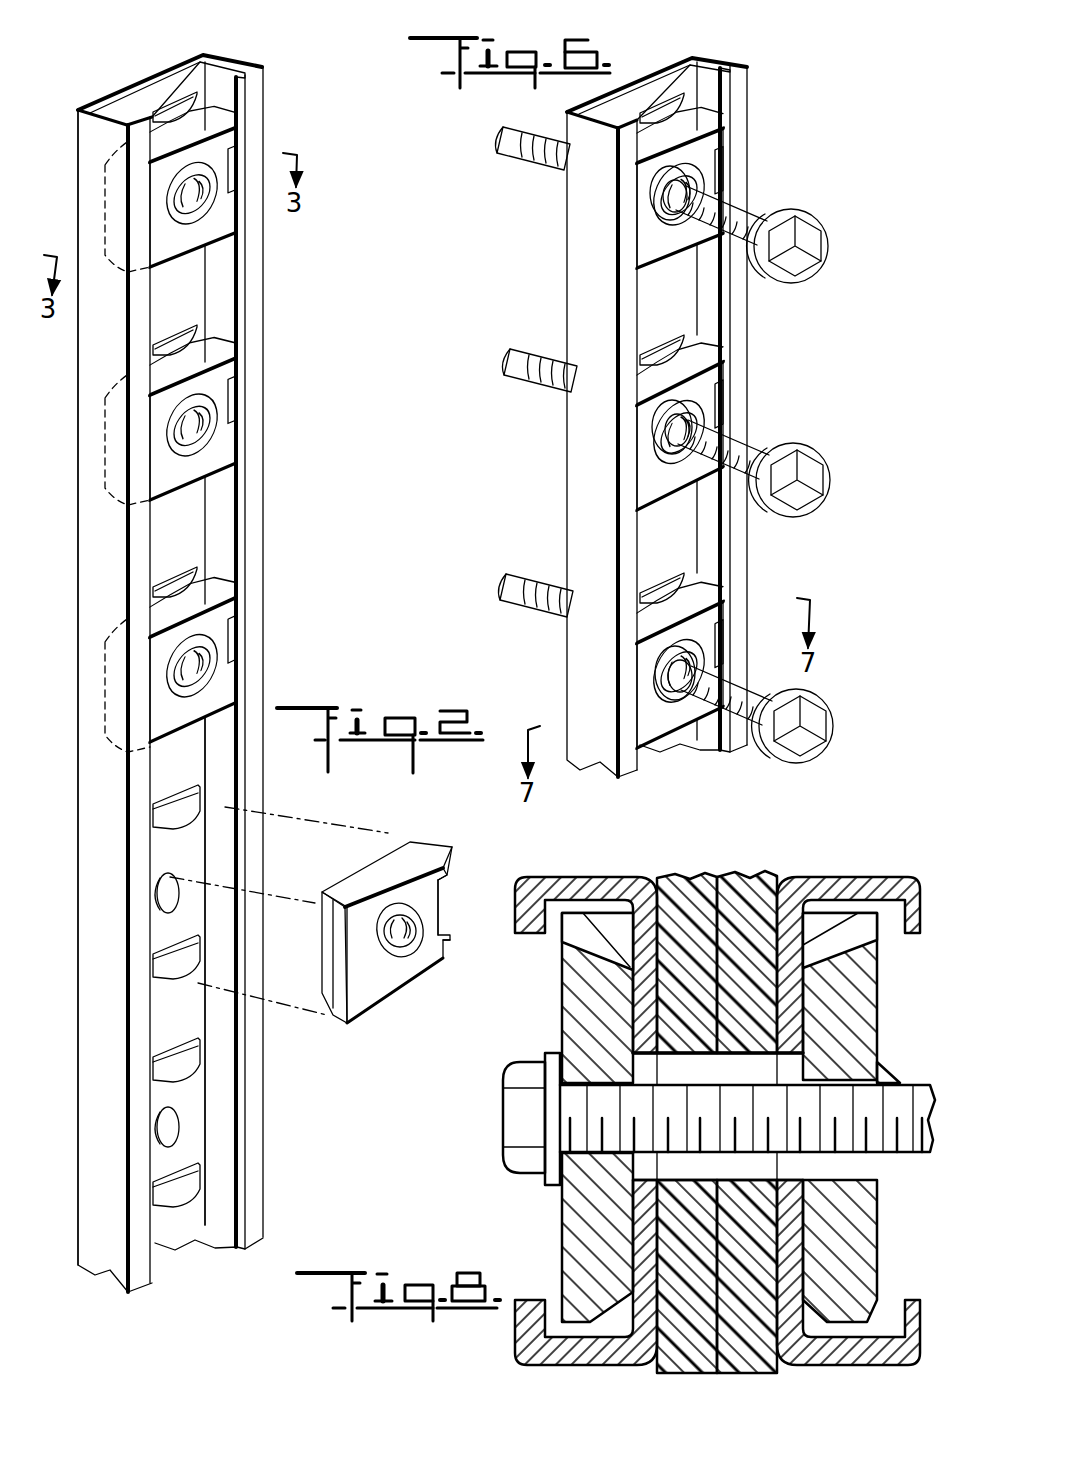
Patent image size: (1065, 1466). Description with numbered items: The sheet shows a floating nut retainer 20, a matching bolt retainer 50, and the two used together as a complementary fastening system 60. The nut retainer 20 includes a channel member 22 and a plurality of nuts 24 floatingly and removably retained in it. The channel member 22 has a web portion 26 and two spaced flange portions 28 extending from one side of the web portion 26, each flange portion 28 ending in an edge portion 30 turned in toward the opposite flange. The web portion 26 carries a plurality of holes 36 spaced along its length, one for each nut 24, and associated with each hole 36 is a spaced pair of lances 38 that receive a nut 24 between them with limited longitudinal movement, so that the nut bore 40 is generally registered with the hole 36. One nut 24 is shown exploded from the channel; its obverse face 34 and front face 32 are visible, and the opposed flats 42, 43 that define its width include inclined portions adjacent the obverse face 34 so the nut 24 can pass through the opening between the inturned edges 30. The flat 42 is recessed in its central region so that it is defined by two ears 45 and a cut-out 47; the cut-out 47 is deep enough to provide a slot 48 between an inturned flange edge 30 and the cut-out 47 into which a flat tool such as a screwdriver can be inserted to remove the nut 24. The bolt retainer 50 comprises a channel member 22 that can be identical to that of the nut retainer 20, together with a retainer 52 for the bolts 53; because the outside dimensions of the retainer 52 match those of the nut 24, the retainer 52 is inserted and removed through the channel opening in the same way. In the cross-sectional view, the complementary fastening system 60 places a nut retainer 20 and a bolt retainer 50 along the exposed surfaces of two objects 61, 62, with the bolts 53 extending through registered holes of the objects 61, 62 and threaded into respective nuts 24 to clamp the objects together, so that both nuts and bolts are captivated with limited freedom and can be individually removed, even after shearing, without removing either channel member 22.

In FIG. 2, the floating nut retainer 20 is at (278, 540).
In FIG. 8, the floating nut retainer 20 is at (897, 872).
In FIG. 2, the channel member 22 is at (266, 566).
In FIG. 6, the channel member 22 is at (752, 392).
In FIG. 2, the nut 24 is at (325, 559).
In FIG. 8, the nut 24 is at (882, 1010).
In FIG. 2, the web portion 26 is at (160, 285).
In FIG. 2, the flange portion 28 is at (245, 272).
In FIG. 2, the edge portion 30 is at (246, 303).
In FIG. 2, the nut front face 32 is at (400, 975).
In FIG. 2, the obverse face 34 is at (348, 882).
In FIG. 2, the hole 36 is at (176, 880).
In FIG. 2, the lance 38 is at (175, 100).
In FIG. 2, the nut bore 40 is at (385, 950).
In FIG. 2, the flat 42 is at (422, 842).
In FIG. 2, the flat 43 is at (130, 470).
In FIG. 2, the ear 45 is at (452, 862).
In FIG. 2, the cut-out 47 is at (440, 905).
In FIG. 2, the slot 48 is at (246, 422).
In FIG. 6, the bolt retainer 50 is at (792, 338).
In FIG. 8, the bolt retainer 50 is at (578, 870).
In FIG. 6, the retainer 52 is at (690, 128).
In FIG. 6, the bolt 53 is at (760, 195).
In FIG. 8, the bolt 53 is at (530, 1168).
In FIG. 8, the complementary fastening system 60 is at (737, 1085).
In FIG. 8, the object 61 is at (676, 880).
In FIG. 8, the object 62 is at (752, 880).